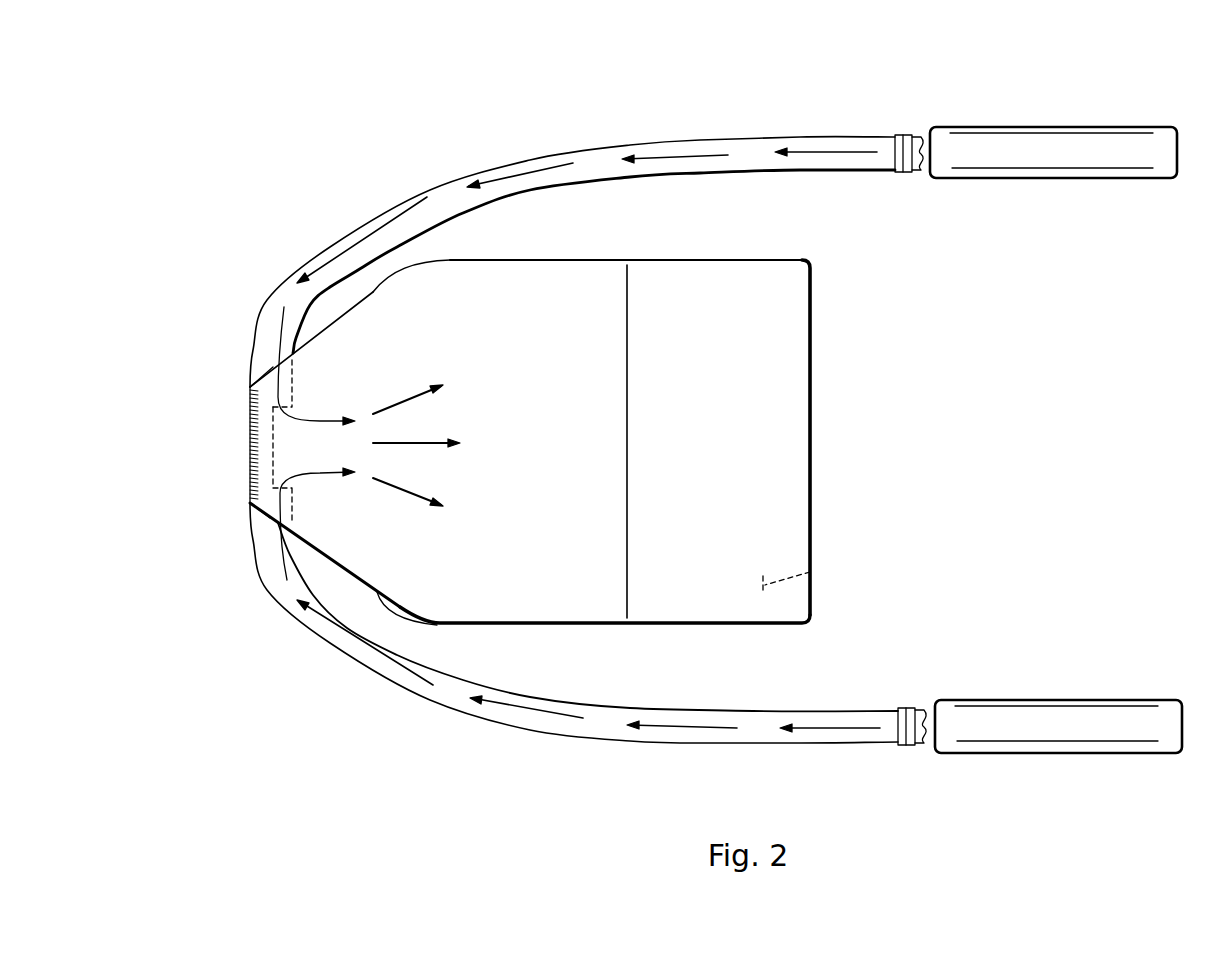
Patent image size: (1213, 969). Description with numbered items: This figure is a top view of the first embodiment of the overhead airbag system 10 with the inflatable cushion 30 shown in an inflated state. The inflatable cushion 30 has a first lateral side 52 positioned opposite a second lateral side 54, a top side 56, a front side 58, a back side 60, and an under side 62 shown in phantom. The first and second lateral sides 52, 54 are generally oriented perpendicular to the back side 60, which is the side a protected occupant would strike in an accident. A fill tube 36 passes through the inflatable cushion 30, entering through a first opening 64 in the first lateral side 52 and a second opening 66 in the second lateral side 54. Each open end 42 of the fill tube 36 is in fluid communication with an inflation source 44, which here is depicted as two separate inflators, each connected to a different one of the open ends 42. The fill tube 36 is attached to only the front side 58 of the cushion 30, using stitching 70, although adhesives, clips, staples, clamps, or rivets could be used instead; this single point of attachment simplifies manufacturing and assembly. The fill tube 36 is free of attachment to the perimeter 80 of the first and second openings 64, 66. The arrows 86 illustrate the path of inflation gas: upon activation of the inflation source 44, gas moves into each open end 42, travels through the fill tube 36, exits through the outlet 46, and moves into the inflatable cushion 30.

The overhead airbag system 10 is at (262, 215).
The inflatable cushion 30 is at (538, 353).
The fill tube 36 is at (647, 140).
The open end 42 is at (913, 135).
The inflation source 44 is at (1040, 140).
The outlet 46 is at (272, 443).
The first lateral side 52 is at (565, 627).
The second lateral side 54 is at (373, 292).
The top side 56 is at (780, 457).
The front side 58 is at (250, 457).
The back side 60 is at (813, 403).
The under side 62 is at (810, 573).
The first opening 64 is at (252, 500).
The second opening 66 is at (252, 386).
The stitching 70 is at (250, 415).
The perimeter 80 is at (263, 376).
The arrows 86 is at (373, 223).